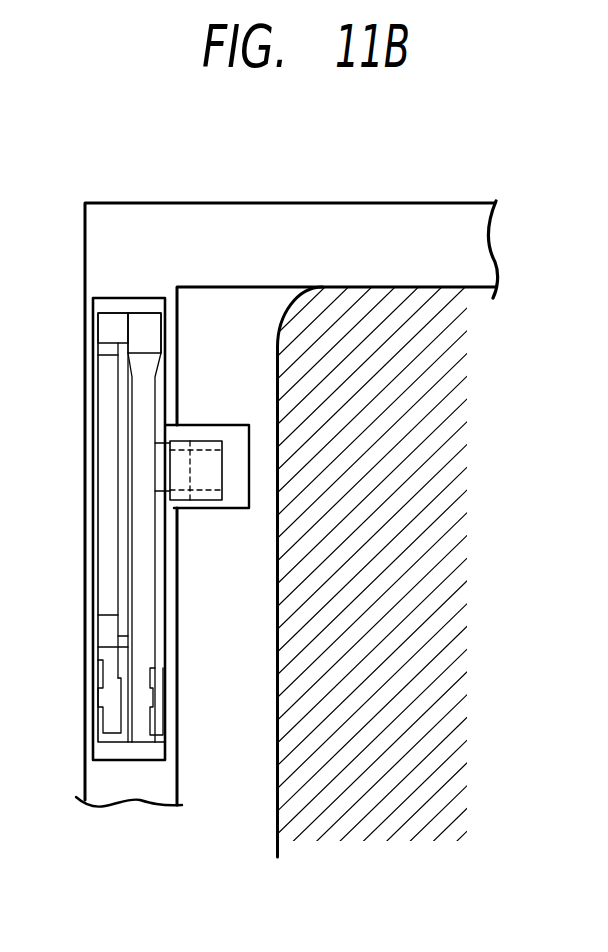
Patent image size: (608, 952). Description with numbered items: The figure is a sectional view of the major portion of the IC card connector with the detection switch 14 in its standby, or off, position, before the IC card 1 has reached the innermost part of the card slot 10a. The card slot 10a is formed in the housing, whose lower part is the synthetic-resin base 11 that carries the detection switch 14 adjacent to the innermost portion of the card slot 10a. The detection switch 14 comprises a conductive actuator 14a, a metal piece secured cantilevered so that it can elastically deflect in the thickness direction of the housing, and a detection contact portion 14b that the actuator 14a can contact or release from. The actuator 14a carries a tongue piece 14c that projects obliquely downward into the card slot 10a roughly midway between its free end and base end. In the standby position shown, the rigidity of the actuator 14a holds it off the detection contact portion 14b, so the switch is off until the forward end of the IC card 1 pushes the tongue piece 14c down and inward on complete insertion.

The IC card 1 is at (447, 298).
The base 11 is at (463, 218).
The card slot 10a is at (247, 307).
The detection switch 14 is at (97, 515).
The actuator 14a is at (147, 323).
The detection contact portion 14b is at (117, 325).
The tongue piece 14c is at (207, 460).